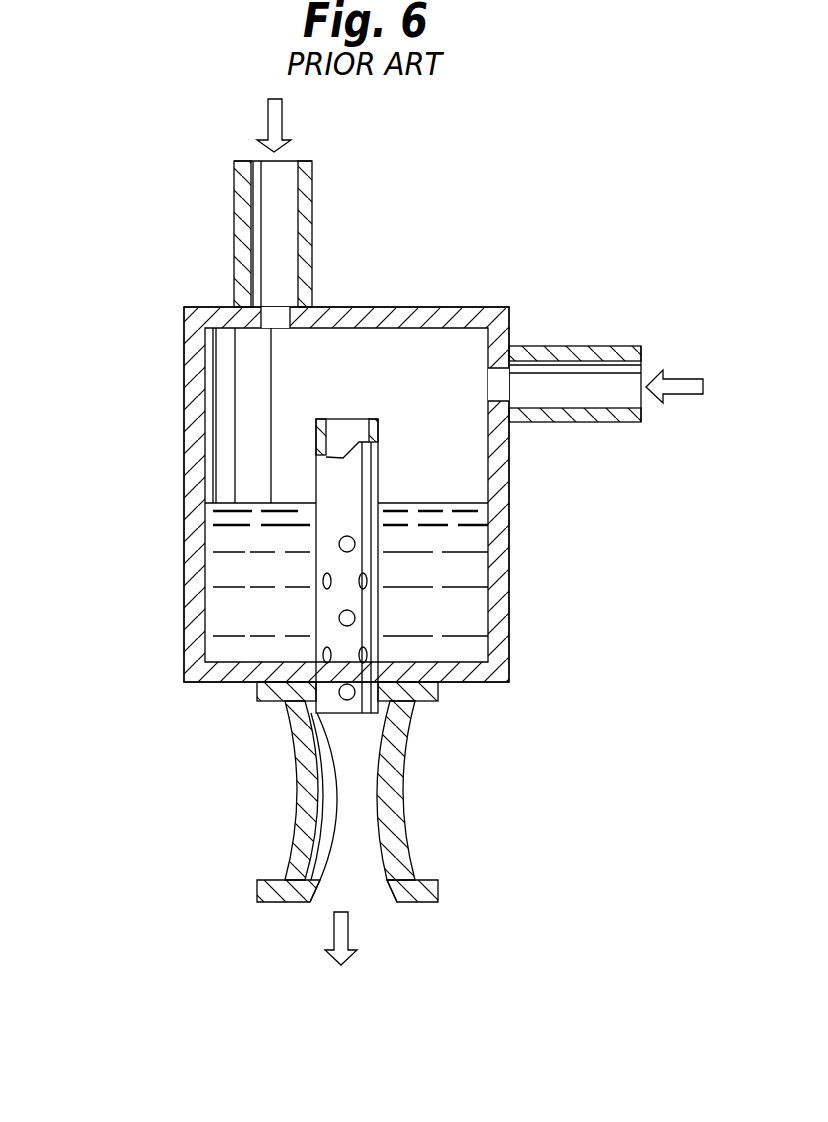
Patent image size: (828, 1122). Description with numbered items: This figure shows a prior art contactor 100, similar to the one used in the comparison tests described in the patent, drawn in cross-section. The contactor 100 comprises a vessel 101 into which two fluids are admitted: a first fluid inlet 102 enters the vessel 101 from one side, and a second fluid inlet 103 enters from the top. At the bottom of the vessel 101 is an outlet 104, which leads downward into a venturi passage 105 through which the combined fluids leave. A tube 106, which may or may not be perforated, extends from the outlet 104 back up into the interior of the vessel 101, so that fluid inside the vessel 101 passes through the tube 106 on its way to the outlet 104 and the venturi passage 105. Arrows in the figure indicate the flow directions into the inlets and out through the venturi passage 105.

The contactor 100 is at (163, 443).
The vessel 101 is at (507, 594).
The first fluid inlet 102 is at (615, 346).
The second fluid inlet 103 is at (308, 189).
The outlet 104 is at (412, 690).
The venturi passage 105 is at (345, 804).
The tube 106 is at (323, 563).